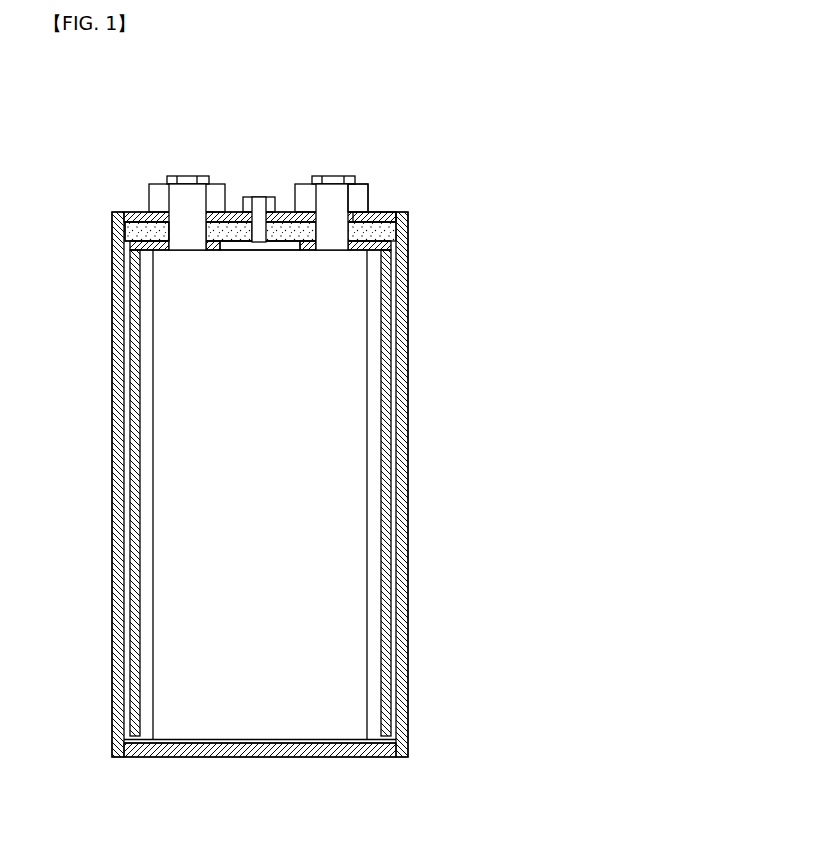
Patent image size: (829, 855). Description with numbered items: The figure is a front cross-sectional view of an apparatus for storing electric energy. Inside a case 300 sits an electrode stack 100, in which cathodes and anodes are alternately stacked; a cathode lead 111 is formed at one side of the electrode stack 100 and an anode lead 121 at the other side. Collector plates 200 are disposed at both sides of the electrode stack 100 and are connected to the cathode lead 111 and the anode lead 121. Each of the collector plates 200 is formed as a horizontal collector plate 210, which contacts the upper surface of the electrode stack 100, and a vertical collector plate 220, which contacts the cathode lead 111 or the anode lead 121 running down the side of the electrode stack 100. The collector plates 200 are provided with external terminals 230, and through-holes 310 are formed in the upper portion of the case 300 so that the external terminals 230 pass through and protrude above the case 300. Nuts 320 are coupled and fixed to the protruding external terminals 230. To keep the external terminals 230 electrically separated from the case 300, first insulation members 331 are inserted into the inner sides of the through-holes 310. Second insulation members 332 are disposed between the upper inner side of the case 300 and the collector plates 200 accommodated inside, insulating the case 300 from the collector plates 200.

The electrode stack 100 is at (352, 460).
The cathode lead 111 is at (375, 360).
The anode lead 121 is at (135, 367).
The collector plates 200 is at (339, 269).
The horizontal collector plate 210 is at (385, 232).
The vertical collector plate 220 is at (385, 293).
The external terminals 230 is at (187, 176).
The case 300 is at (135, 212).
The through-holes 310 is at (318, 207).
The nuts 320 is at (362, 198).
The first insulation members 331 is at (385, 217).
The second insulation members 332 is at (130, 234).